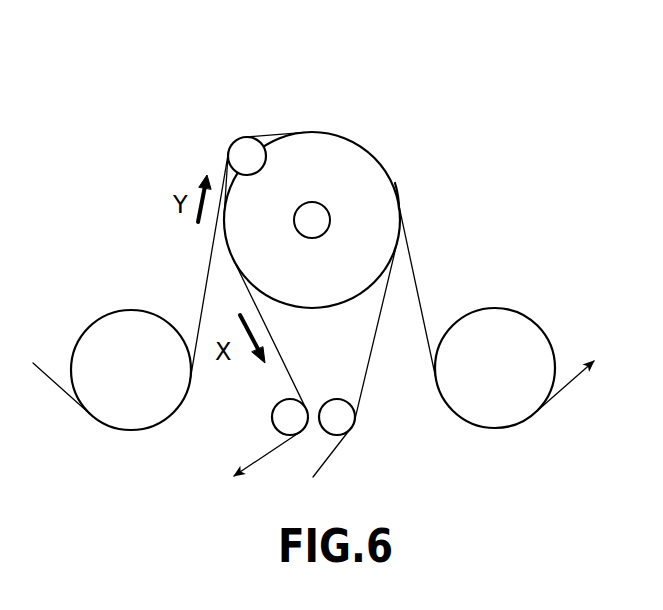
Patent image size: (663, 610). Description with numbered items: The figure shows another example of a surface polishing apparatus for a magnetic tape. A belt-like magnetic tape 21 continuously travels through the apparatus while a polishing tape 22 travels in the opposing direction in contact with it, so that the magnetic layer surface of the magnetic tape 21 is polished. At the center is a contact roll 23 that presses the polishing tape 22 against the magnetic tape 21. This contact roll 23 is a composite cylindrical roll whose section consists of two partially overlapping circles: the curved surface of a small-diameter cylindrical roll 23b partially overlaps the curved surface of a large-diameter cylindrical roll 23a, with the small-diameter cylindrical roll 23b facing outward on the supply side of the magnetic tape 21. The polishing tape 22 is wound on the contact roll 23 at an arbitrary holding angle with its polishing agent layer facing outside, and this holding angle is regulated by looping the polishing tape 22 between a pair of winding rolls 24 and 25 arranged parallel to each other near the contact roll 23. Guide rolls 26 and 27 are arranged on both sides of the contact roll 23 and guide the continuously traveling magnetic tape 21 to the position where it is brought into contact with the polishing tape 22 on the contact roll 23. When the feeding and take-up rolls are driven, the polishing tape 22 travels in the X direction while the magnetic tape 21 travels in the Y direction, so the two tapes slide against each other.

The magnetic tape 21 is at (418, 282).
The polishing tape 22 is at (380, 328).
The contact roll 23 is at (366, 121).
The large-diameter cylindrical roll 23a is at (393, 193).
The small-diameter cylindrical roll 23b is at (243, 150).
The winding roll 24 is at (278, 415).
The winding roll 25 is at (353, 423).
The guide roll 26 is at (123, 318).
The guide roll 27 is at (510, 320).